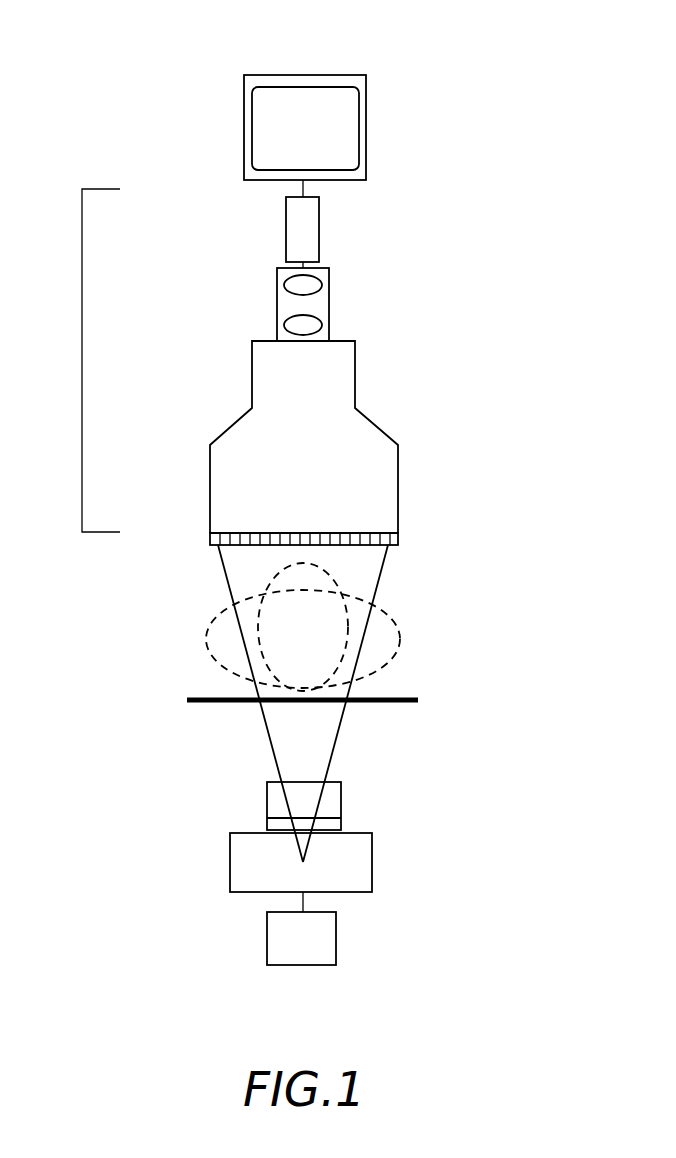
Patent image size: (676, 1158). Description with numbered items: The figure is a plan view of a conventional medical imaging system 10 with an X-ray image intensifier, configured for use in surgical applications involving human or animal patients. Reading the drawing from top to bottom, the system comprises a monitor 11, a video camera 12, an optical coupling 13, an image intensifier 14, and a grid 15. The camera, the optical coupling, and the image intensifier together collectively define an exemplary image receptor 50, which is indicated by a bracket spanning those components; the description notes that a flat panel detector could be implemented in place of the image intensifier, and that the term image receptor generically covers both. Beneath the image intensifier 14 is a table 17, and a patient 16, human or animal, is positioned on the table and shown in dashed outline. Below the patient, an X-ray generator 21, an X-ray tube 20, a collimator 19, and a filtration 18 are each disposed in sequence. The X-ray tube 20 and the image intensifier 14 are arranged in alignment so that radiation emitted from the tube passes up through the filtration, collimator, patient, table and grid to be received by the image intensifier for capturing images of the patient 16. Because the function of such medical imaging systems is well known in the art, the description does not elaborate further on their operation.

The medical imaging system 10 is at (152, 32).
The monitor 11 is at (366, 127).
The video camera 12 is at (286, 232).
The optical coupling 13 is at (329, 307).
The image intensifier 14 is at (210, 452).
The grid 15 is at (398, 538).
The patient 16 is at (207, 637).
The table 17 is at (418, 700).
The filtration 18 is at (267, 785).
The collimator 19 is at (341, 810).
The X-ray tube 20 is at (230, 863).
The X-ray generator 21 is at (336, 945).
The image receptor 50 is at (80, 360).